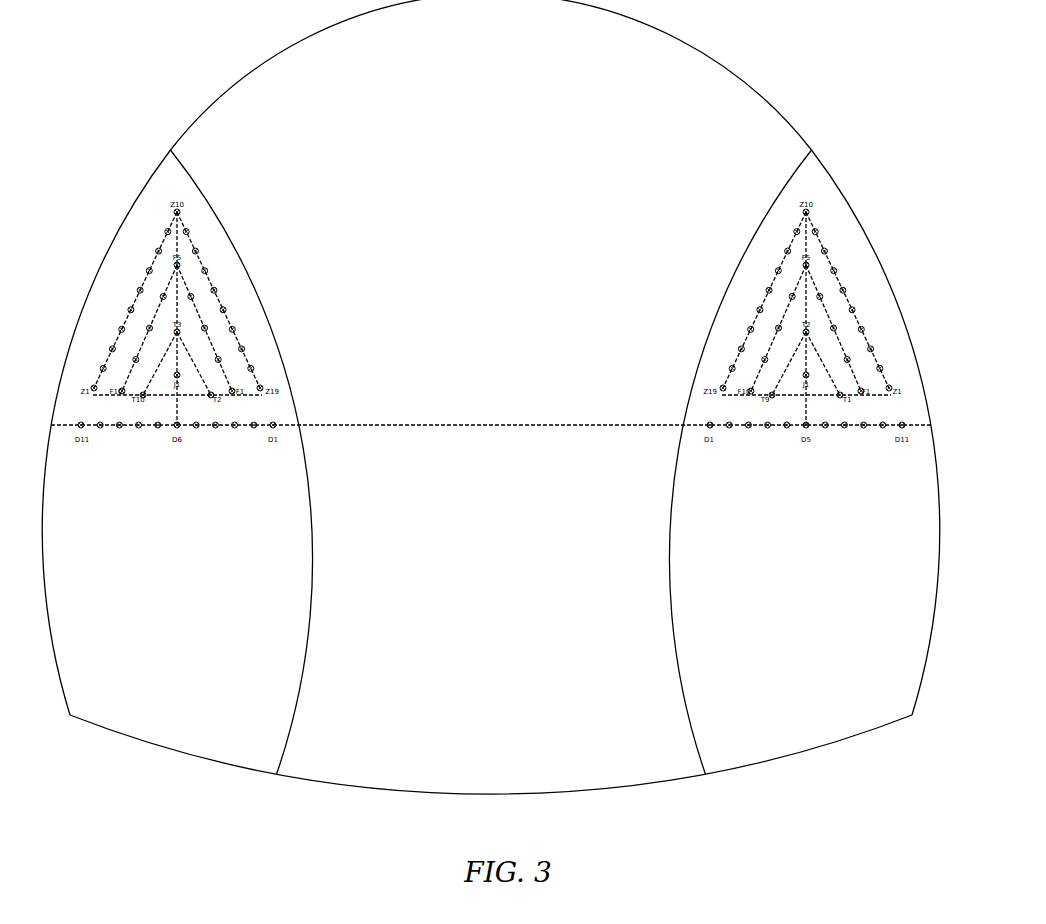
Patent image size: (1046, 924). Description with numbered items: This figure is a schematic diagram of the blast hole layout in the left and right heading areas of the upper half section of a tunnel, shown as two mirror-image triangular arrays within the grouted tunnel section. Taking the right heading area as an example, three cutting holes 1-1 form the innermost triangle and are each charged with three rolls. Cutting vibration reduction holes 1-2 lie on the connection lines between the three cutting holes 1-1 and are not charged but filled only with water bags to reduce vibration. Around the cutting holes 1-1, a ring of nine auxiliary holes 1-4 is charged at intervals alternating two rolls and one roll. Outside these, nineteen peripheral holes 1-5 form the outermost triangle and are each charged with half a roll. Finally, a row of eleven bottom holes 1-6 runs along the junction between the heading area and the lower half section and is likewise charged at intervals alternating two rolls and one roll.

The peripheral holes 1-5 is at (828, 247).
The auxiliary holes 1-4 is at (838, 325).
The cutting holes 1-1 is at (768, 398).
The cutting vibration reduction holes 1-2 is at (805, 375).
The bottom holes 1-6 is at (730, 427).